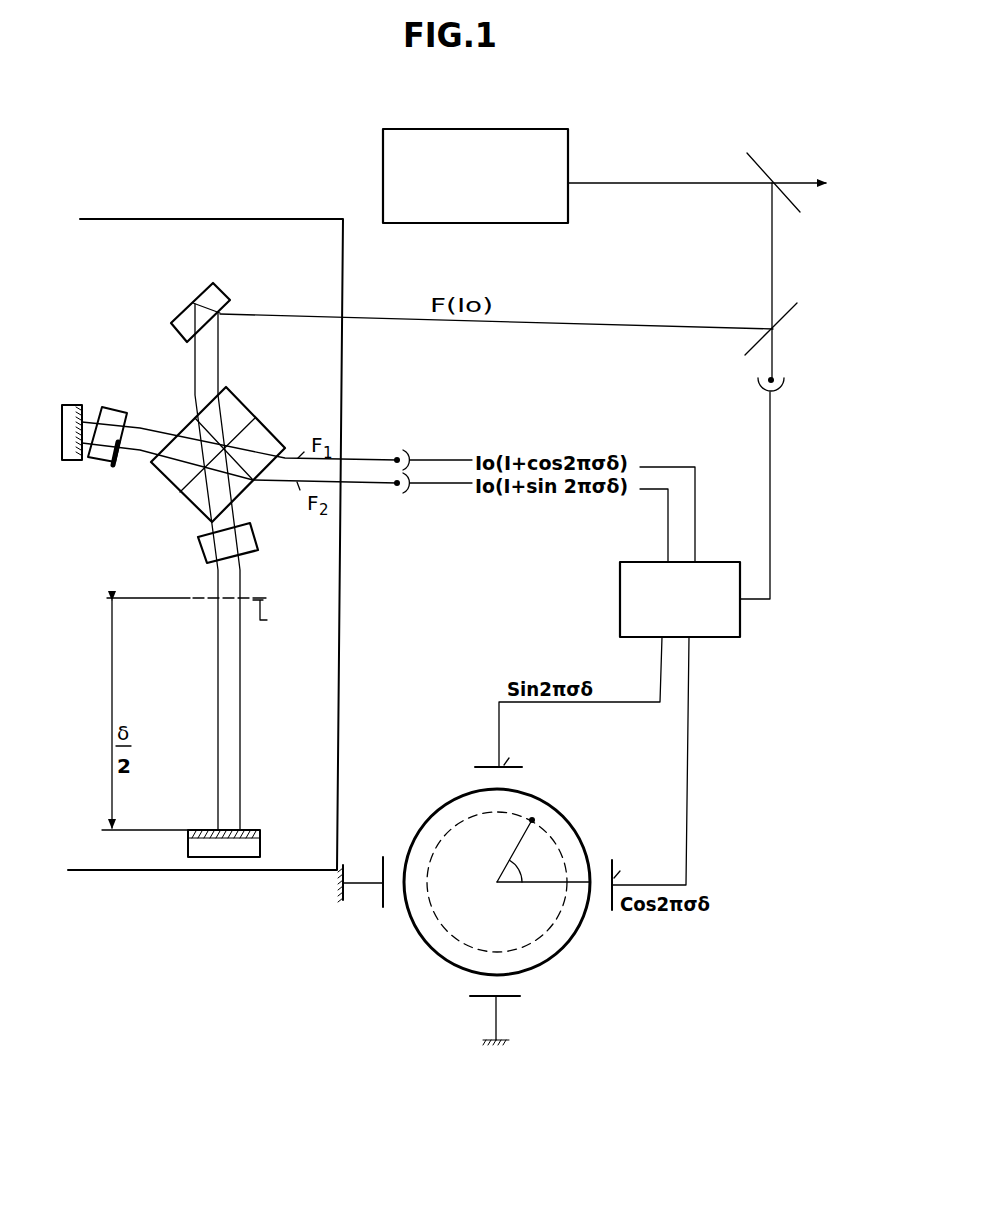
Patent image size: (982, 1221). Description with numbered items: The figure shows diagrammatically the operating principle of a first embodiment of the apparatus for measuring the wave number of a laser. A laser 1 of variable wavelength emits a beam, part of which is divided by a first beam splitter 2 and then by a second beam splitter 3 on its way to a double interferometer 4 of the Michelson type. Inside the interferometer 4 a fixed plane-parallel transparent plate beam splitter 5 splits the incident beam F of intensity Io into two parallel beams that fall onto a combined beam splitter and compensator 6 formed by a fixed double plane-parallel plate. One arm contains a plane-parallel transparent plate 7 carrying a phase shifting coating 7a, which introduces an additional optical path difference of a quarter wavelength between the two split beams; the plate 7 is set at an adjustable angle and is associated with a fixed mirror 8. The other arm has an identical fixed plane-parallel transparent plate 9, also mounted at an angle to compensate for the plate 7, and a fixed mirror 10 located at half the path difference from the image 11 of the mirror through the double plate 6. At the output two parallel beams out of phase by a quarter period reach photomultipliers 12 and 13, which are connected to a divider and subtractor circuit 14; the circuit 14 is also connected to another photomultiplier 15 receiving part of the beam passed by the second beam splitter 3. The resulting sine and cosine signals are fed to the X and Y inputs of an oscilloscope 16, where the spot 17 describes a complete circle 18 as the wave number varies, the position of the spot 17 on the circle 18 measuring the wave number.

The laser 1 is at (463, 220).
The first beam splitter 2 is at (773, 175).
The second beam splitter 3 is at (790, 313).
The double interferometer 4 is at (343, 352).
The fixed plane-parallel transparent plate beam splitter 5 is at (201, 298).
The combined beam splitter and compensator 6 is at (248, 403).
The plane-parallel transparent plate 7 is at (119, 414).
The phase shifting coating 7a is at (118, 468).
The fixed mirror 8 is at (73, 410).
The fixed plane-parallel transparent plate 9 is at (250, 553).
The fixed mirror 10 is at (251, 846).
The image of the mirror 11 is at (275, 616).
The photomultiplier 12 is at (409, 452).
The photomultiplier 13 is at (409, 491).
The divider and subtractor circuit 14 is at (628, 589).
The photomultiplier 15 is at (782, 403).
The oscilloscope 16 is at (556, 963).
The spot 17 is at (534, 816).
The circle 18 is at (559, 851).